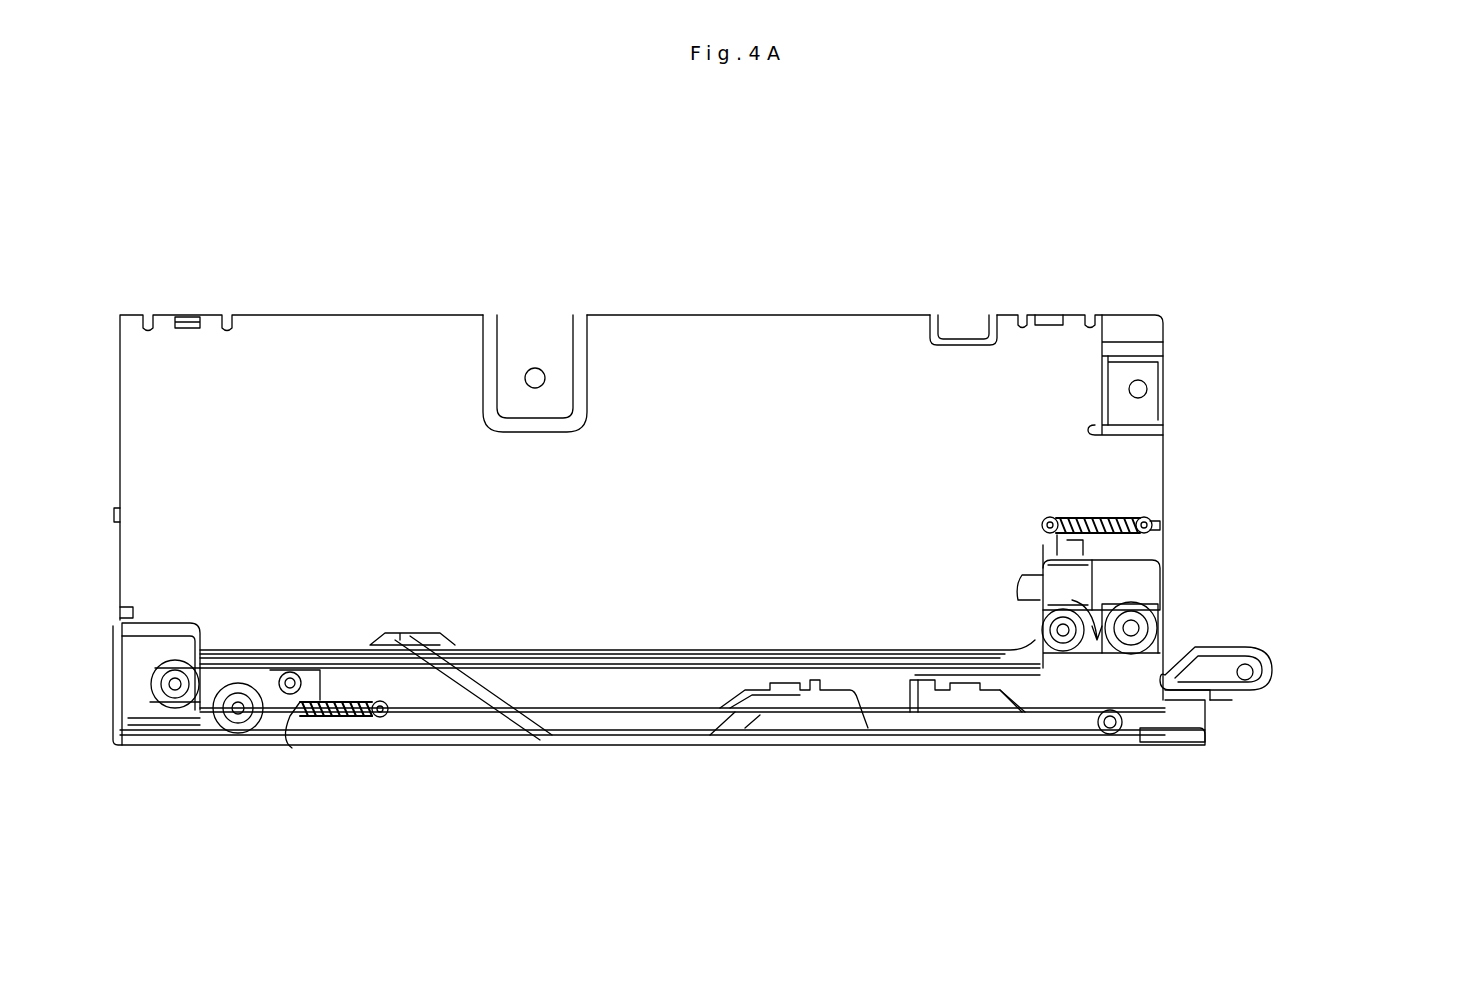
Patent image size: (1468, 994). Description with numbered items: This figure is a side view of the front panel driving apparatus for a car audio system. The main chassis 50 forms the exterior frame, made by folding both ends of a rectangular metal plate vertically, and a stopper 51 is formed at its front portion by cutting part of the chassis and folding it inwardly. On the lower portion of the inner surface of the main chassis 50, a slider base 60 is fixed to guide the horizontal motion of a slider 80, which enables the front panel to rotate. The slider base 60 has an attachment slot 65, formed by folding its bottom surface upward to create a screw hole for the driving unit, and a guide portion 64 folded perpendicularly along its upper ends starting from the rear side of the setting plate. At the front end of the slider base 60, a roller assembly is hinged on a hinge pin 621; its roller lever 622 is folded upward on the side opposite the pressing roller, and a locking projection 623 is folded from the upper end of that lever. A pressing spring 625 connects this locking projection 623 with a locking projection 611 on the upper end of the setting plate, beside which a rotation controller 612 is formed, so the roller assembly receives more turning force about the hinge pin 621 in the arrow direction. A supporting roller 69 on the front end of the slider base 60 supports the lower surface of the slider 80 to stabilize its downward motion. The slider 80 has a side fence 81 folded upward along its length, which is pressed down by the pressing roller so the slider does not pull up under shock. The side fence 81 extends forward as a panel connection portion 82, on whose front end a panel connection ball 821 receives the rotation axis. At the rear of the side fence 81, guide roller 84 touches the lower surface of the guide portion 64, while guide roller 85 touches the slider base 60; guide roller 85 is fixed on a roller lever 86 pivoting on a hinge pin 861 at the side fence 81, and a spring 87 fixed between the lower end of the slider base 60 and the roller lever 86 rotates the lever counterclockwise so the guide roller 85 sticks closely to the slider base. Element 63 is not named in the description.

The main chassis 50 is at (318, 365).
The stopper 51 is at (1015, 600).
The slider base 60 is at (792, 735).
The roller 63 is at (1145, 615).
The guide portion 64 is at (790, 640).
The attachment slot 65 is at (853, 692).
The supporting roller 69 is at (1122, 738).
The slider 80 is at (1042, 685).
The side fence 81 is at (580, 660).
The panel connection portion 82 is at (1235, 692).
The guide roller 84 is at (190, 725).
The guide roller 85 is at (252, 730).
The roller lever 86 is at (300, 740).
The spring 87 is at (375, 740).
The locking projection 611 is at (1088, 565).
The rotation controller 612 is at (1130, 540).
The hinge pin 621 is at (1070, 682).
The roller lever 622 is at (1112, 520).
The locking projection 623 is at (1043, 560).
The pressing spring 625 is at (1084, 518).
The panel connection ball 821 is at (1262, 665).
The hinge pin 861 is at (295, 672).